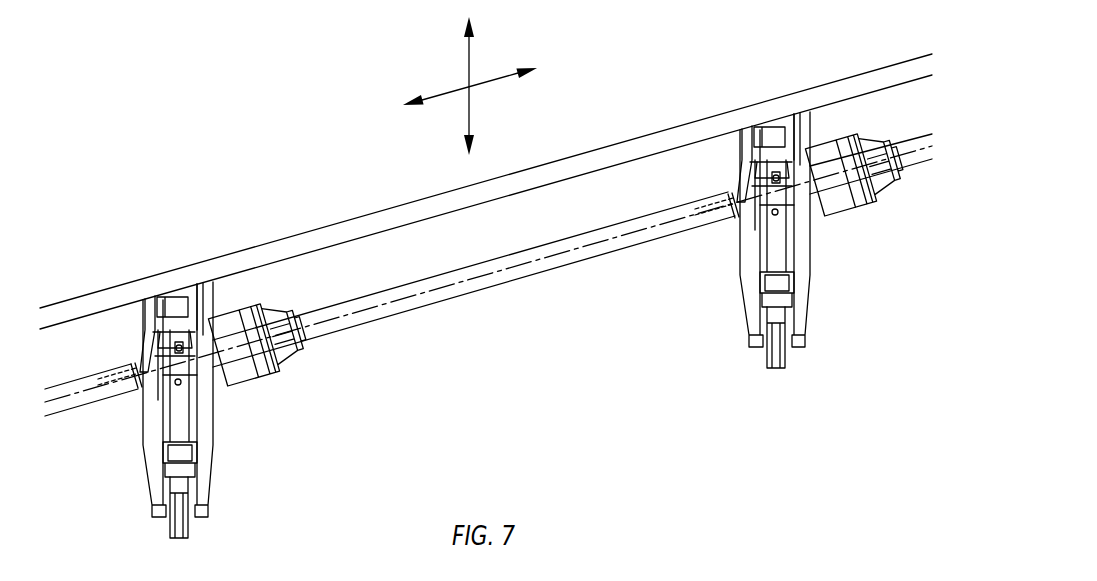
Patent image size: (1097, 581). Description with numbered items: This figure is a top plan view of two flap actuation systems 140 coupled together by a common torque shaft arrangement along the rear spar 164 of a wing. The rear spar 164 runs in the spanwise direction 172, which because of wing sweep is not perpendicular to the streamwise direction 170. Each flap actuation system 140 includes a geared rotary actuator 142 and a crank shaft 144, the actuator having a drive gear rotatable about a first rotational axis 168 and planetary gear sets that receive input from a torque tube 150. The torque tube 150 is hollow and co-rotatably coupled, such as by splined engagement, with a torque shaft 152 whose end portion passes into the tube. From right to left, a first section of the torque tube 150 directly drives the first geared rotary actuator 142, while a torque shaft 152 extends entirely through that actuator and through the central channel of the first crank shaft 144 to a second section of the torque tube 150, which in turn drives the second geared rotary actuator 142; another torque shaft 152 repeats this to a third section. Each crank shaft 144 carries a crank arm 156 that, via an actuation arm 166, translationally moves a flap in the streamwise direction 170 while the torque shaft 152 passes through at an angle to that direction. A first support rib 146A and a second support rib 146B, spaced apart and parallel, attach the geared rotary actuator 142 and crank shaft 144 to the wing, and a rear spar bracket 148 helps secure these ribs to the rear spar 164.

The flap actuation system 140 is at (226, 488).
The geared rotary actuator 142 is at (277, 387).
The crank shaft 144 is at (187, 327).
The first support rib 146A is at (155, 483).
The second support rib 146B is at (205, 432).
The rear spar bracket 148 is at (175, 308).
The torque tube 150 is at (88, 377).
The torque shaft 152 is at (144, 362).
The crank arm 156 is at (161, 324).
The rear spar 164 is at (622, 148).
The actuation arm 166 is at (180, 530).
The first rotational axis 168 is at (95, 402).
The streamwise direction 170 is at (470, 53).
The spanwise direction 172 is at (453, 88).